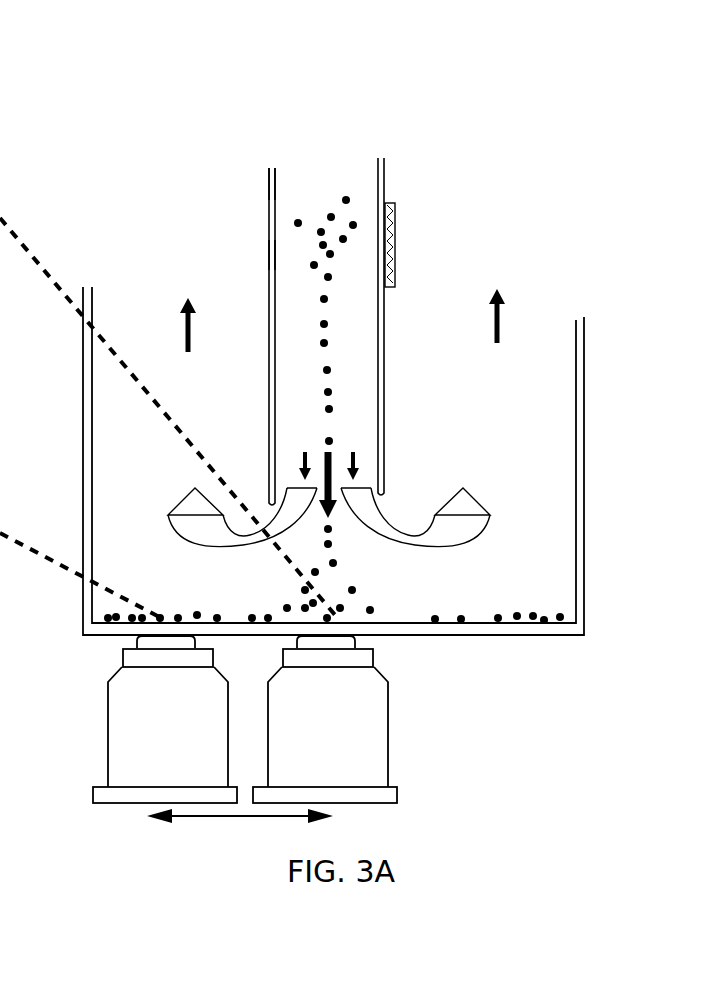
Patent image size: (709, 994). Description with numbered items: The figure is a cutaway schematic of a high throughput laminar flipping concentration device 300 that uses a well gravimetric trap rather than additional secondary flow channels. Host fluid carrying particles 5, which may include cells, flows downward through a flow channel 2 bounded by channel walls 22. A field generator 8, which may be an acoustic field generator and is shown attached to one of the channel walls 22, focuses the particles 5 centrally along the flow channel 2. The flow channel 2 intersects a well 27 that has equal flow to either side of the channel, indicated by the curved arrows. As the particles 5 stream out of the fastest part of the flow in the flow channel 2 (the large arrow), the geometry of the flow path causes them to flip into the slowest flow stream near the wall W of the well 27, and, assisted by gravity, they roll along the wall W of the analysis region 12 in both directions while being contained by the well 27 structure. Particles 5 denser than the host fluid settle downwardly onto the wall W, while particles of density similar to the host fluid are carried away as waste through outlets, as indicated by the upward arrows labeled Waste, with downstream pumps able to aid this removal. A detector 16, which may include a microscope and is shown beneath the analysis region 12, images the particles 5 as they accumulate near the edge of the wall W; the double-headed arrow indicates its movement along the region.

The device 300 is at (362, 88).
The flow channel 2 is at (288, 200).
The channel walls 22 is at (270, 253).
The field generator 8 is at (396, 228).
The particles 5 is at (345, 398).
The well 27 is at (584, 483).
The wall W is at (388, 614).
The analysis region 12 is at (385, 640).
The detector 16 is at (182, 749).